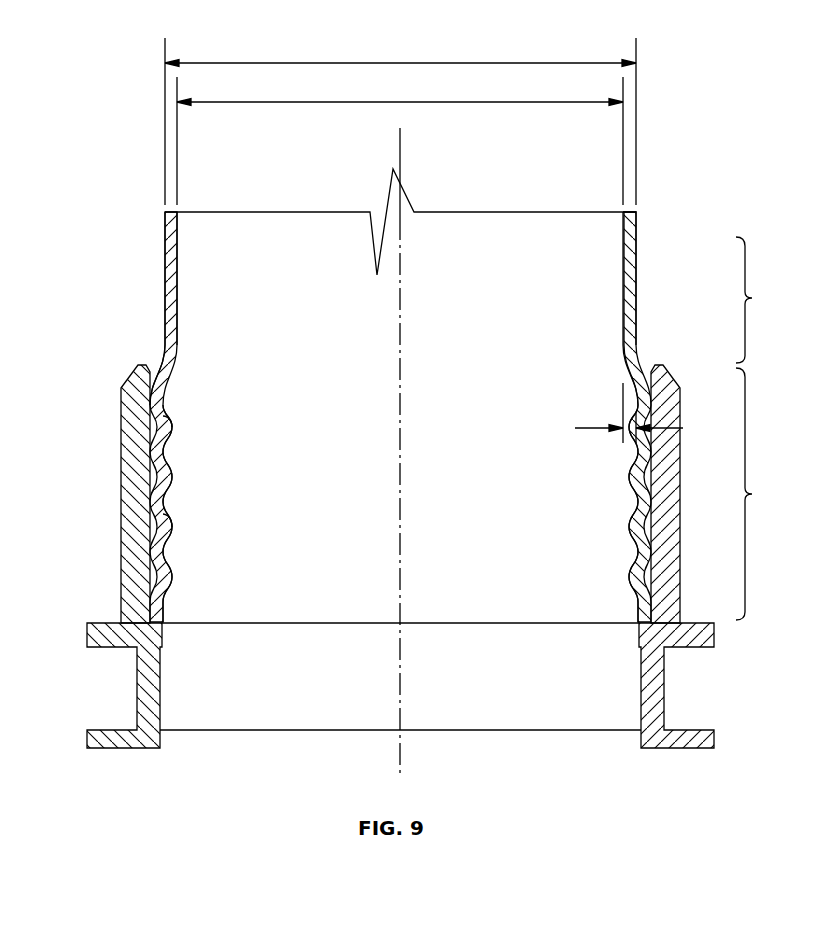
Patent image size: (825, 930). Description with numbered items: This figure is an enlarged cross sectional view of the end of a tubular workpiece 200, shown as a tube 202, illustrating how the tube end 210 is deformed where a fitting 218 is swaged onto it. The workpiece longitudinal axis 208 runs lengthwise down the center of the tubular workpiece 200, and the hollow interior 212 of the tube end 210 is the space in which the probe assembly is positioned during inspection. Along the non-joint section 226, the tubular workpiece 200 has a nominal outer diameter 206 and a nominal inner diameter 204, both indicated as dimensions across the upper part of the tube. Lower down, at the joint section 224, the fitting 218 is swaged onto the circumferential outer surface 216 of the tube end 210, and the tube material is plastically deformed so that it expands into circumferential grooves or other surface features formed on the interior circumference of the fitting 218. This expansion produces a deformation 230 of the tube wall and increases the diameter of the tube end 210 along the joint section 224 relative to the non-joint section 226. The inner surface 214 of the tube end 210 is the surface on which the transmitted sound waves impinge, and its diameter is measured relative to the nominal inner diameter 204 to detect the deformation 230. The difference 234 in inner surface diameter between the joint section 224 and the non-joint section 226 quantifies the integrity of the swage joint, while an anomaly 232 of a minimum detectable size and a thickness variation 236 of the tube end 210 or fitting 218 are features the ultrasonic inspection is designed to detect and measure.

The tubular workpiece 200 is at (395, 395).
The tube 202 is at (165, 270).
The nominal inner diameter 204 is at (436, 102).
The nominal outer diameter 206 is at (416, 63).
The workpiece longitudinal axis 208 is at (400, 150).
The tube end 210 is at (165, 322).
The interior 212 is at (213, 703).
The inner surface 214 is at (623, 240).
The circumferential outer surface 216 is at (636, 232).
The fitting 218 is at (121, 538).
The joint section 224 is at (766, 494).
The non-joint section 226 is at (766, 300).
The deformation 230 is at (162, 478).
The anomaly 232 is at (160, 428).
The difference 234 is at (583, 428).
The thickness variation 236 is at (160, 526).